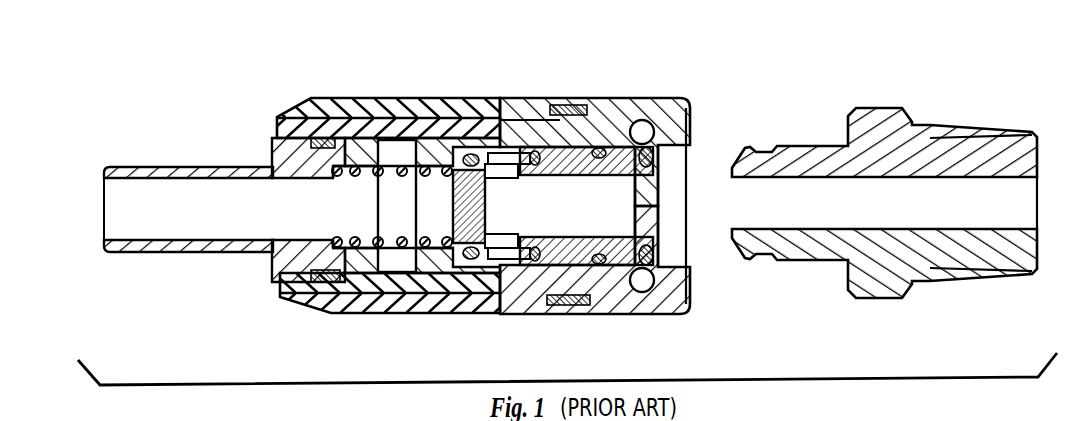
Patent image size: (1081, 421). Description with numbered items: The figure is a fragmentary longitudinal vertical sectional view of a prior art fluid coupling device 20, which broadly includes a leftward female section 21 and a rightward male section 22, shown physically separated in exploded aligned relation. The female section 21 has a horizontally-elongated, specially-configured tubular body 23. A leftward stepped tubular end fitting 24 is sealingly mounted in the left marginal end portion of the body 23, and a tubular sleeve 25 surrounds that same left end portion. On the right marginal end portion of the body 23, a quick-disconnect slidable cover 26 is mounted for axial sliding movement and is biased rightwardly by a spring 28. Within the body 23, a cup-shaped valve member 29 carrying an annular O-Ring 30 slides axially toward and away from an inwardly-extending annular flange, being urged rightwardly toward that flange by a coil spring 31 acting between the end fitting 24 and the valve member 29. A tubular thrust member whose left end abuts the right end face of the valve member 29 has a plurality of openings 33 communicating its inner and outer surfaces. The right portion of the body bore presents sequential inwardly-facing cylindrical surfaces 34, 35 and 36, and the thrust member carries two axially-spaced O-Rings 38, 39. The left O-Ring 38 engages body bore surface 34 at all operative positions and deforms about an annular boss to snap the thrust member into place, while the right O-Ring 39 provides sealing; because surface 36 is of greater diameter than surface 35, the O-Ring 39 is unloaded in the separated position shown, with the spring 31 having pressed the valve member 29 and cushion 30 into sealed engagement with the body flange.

The coupling device 20 is at (840, 52).
The female section 21 is at (337, 90).
The male section 22 is at (932, 115).
The tubular body 23 is at (333, 313).
The end fitting 24 is at (187, 168).
The tubular sleeve 25 is at (443, 102).
The slidable cover 26 is at (618, 102).
The spring 28 is at (565, 100).
The valve member 29 is at (452, 192).
The O-Ring 30 is at (483, 148).
The coil spring 31 is at (378, 238).
The openings 33 is at (500, 187).
The body bore surface 34 is at (528, 270).
The body bore surface 35 is at (567, 178).
The body bore surface 36 is at (626, 237).
The left O-Ring 38 is at (528, 270).
The right O-Ring 39 is at (605, 258).